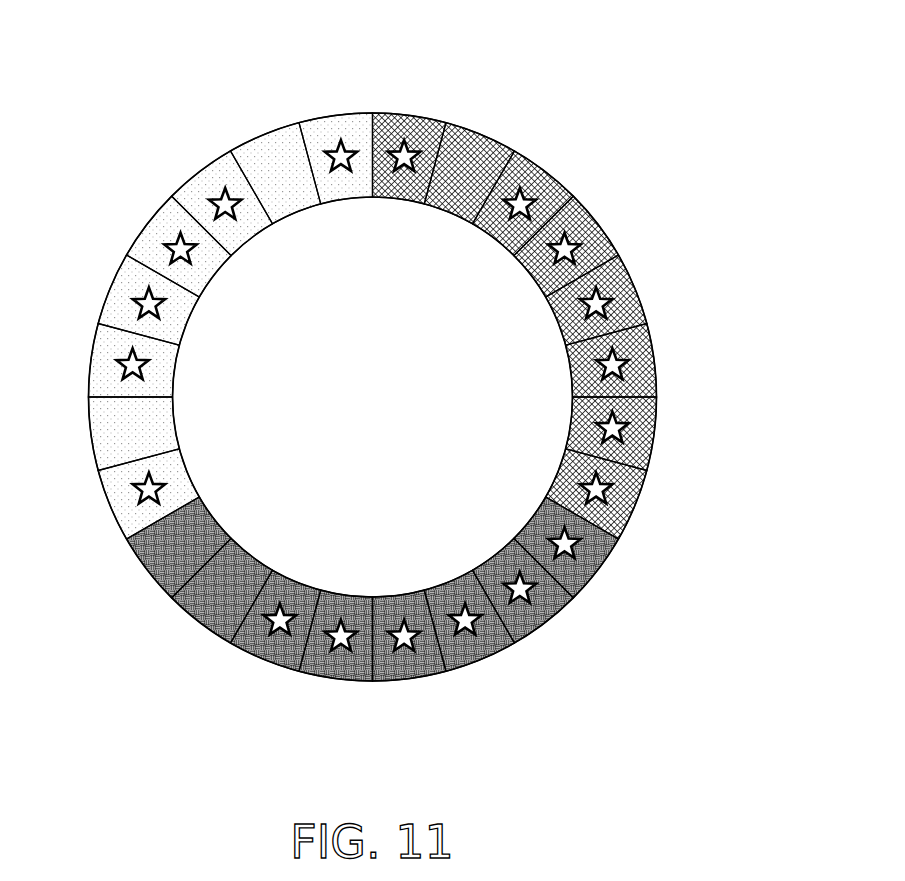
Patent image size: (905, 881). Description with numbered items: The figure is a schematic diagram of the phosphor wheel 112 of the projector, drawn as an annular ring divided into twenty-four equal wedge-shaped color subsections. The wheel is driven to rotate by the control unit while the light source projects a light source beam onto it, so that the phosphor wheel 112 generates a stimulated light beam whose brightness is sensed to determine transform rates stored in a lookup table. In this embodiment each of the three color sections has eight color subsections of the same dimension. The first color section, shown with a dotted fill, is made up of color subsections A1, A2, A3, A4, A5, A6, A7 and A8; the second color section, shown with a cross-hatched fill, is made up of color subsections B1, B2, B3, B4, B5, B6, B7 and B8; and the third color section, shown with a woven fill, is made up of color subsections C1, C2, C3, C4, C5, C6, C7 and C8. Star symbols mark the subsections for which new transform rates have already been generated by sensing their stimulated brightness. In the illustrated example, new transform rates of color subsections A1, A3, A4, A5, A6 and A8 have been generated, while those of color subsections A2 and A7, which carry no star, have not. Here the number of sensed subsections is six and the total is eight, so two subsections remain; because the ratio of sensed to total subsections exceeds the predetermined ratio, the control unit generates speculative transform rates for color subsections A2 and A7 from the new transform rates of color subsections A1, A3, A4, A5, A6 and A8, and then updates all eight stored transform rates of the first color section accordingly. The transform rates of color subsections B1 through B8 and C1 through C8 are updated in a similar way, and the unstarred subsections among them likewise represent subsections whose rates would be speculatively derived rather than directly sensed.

The phosphor wheel 112 is at (385, 371).
The color subsection A1 is at (134, 494).
The color subsection A2 is at (113, 434).
The color subsection A3 is at (113, 361).
The color subsection A4 is at (134, 300).
The color subsection A5 is at (170, 245).
The color subsection A6 is at (219, 195).
The color subsection A7 is at (276, 160).
The color subsection A8 is at (336, 139).
The color subsection B1 is at (410, 139).
The color subsection B2 is at (469, 160).
The color subsection B3 is at (525, 195).
The color subsection B4 is at (574, 245).
The color subsection B5 is at (611, 300).
The color subsection B6 is at (631, 361).
The color subsection B7 is at (631, 434).
The color subsection B8 is at (611, 494).
The color subsection C1 is at (574, 548).
The color subsection C2 is at (525, 597).
The color subsection C3 is at (469, 634).
The color subsection C4 is at (410, 654).
The color subsection C5 is at (336, 654).
The color subsection C6 is at (276, 634).
The color subsection C7 is at (219, 597).
The color subsection C8 is at (170, 548).